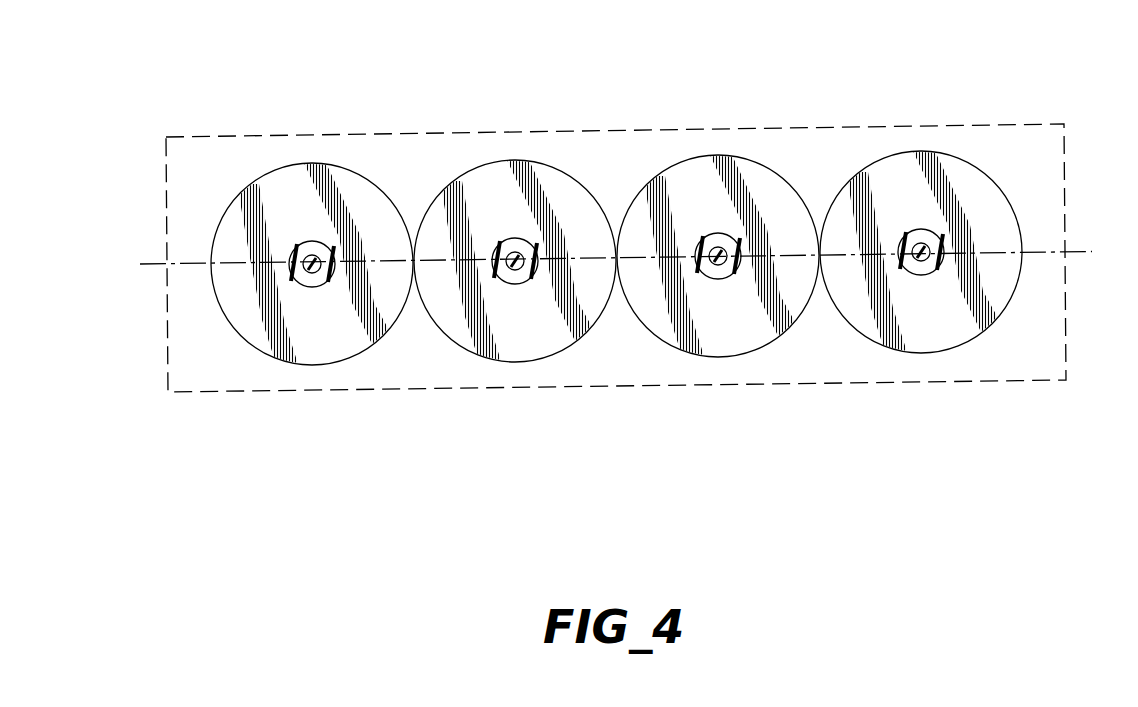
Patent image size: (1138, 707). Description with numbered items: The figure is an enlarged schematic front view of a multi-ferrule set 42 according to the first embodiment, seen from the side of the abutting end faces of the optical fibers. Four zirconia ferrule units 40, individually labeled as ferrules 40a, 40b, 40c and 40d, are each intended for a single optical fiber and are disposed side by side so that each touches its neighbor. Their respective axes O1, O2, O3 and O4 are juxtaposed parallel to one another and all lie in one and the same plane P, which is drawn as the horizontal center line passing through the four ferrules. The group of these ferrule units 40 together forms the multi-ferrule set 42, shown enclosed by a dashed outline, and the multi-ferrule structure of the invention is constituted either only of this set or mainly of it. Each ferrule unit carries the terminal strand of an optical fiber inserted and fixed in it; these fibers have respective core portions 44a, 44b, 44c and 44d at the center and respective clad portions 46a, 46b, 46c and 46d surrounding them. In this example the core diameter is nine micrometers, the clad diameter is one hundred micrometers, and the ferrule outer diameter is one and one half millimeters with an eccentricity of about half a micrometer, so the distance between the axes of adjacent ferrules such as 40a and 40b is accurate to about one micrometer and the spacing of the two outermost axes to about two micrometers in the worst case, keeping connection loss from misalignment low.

The ferrule units 40 is at (976, 55).
The zirconia ferrule 40a is at (295, 283).
The zirconia ferrule 40b is at (515, 289).
The zirconia ferrule 40c is at (722, 278).
The zirconia ferrule 40d is at (927, 270).
The multi-ferrule set 42 is at (1043, 124).
The core portion 44a is at (349, 335).
The core portion 44b is at (551, 333).
The core portion 44c is at (761, 328).
The core portion 44d is at (966, 326).
The clad portion 46a is at (249, 350).
The clad portion 46b is at (475, 354).
The clad portion 46c is at (687, 335).
The clad portion 46d is at (893, 331).
The axis O1 is at (304, 372).
The axis O2 is at (515, 377).
The axis O3 is at (725, 367).
The axis O4 is at (930, 358).
The plane P is at (1086, 248).